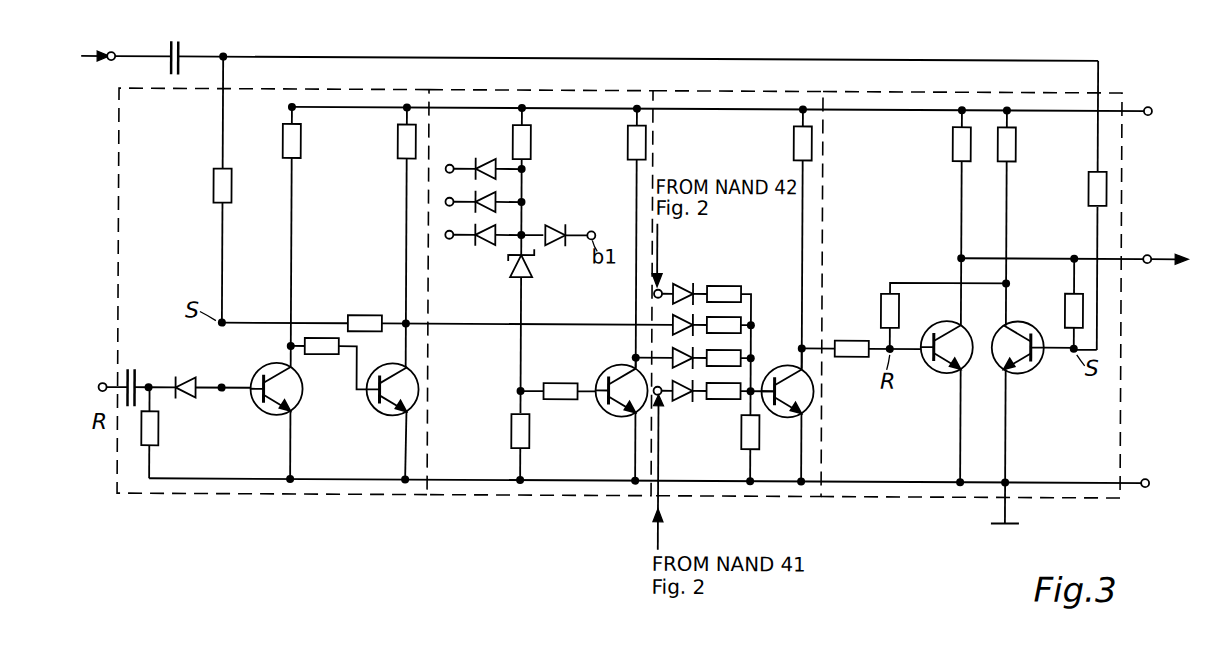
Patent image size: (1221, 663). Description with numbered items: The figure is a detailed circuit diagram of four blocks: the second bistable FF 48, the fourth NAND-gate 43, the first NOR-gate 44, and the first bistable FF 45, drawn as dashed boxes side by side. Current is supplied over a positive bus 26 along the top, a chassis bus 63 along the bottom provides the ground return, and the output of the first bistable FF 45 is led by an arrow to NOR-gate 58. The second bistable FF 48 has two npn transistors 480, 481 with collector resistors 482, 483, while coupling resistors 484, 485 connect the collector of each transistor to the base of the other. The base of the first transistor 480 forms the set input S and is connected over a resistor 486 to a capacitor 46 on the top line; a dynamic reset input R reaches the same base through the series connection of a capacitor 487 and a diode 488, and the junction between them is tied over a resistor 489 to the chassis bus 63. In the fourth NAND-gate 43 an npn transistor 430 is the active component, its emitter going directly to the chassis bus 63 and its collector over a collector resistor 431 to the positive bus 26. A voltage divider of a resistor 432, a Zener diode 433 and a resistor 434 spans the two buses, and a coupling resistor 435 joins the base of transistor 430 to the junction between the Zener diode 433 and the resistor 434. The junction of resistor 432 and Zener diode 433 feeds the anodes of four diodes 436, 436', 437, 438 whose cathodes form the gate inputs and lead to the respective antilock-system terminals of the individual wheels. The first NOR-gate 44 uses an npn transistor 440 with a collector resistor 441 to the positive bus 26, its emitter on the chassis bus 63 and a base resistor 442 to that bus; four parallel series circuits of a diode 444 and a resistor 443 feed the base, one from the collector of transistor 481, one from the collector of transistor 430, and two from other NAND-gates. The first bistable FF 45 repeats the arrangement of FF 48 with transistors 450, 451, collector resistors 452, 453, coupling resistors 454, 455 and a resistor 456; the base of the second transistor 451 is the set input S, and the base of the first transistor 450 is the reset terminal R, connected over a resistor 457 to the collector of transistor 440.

The capacitor 46 is at (181, 47).
The positive bus 26 is at (1150, 102).
The NOR-gate 58 is at (1089, 259).
The chassis bus 63 is at (1148, 484).
The second bistable FF 48 is at (306, 497).
The fourth NAND-gate 43 is at (539, 497).
The first NOR-gate 44 is at (726, 497).
The first bistable FF 45 is at (910, 497).
The first transistor 480 is at (304, 401).
The second transistor 481 is at (392, 410).
The collector resistor 482 is at (300, 146).
The collector resistor 483 is at (397, 146).
The coupling resistor 484 is at (322, 355).
The coupling resistor 485 is at (366, 313).
The resistor 486 is at (213, 187).
The capacitor 487 is at (138, 375).
The diode 488 is at (188, 398).
The resistor 489 is at (159, 428).
The transistor 430 is at (615, 408).
The collector resistor 431 is at (627, 147).
The resistor 432 is at (531, 142).
The Zener diode 433 is at (528, 275).
The resistor 434 is at (512, 430).
The coupling resistor 435 is at (561, 371).
The diode 436 is at (484, 153).
The diode 436' is at (563, 221).
The diode 437 is at (522, 181).
The diode 438 is at (492, 244).
The transistor 440 is at (790, 411).
The collector resistor 441 is at (793, 146).
The base resistor 442 is at (742, 430).
The resistor 443 is at (727, 284).
The diode 444 is at (685, 280).
The first transistor 450 is at (940, 369).
The second transistor 451 is at (1040, 355).
The collector resistor 452 is at (952, 146).
The collector resistor 453 is at (1015, 146).
The coupling resistor 454 is at (1065, 312).
The coupling resistor 455 is at (881, 312).
The resistor 456 is at (1088, 187).
The resistor 457 is at (853, 360).